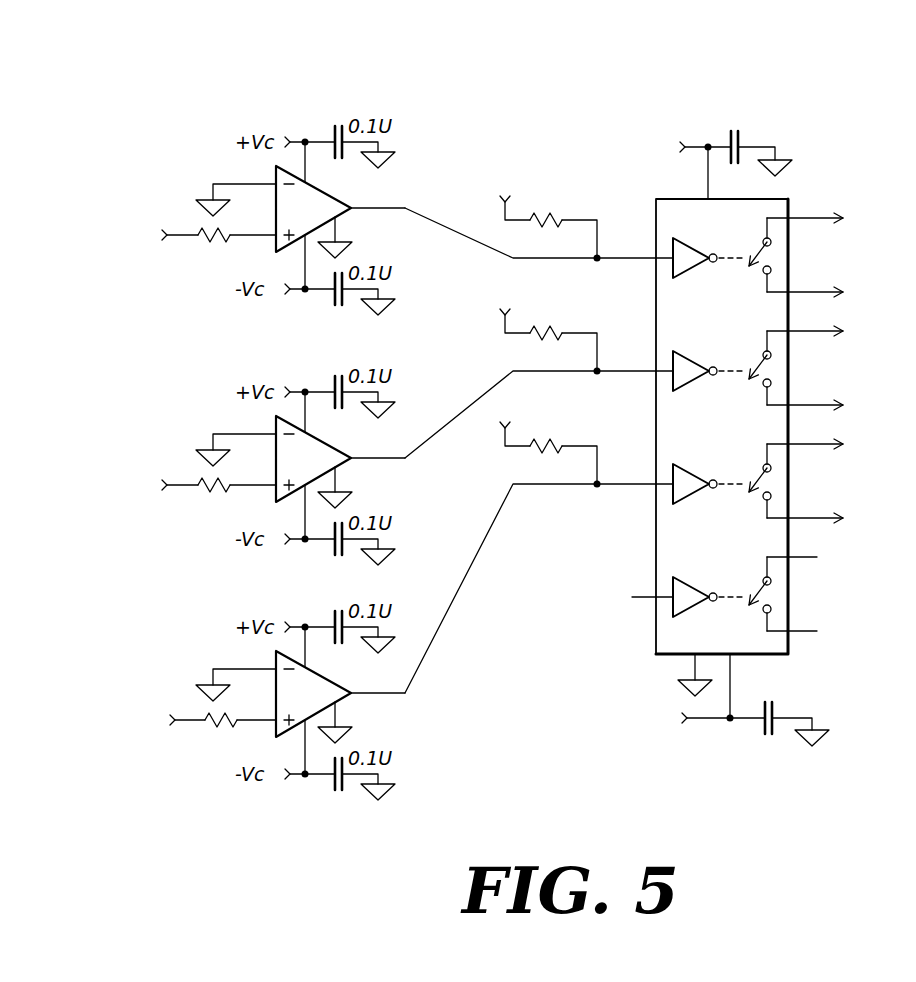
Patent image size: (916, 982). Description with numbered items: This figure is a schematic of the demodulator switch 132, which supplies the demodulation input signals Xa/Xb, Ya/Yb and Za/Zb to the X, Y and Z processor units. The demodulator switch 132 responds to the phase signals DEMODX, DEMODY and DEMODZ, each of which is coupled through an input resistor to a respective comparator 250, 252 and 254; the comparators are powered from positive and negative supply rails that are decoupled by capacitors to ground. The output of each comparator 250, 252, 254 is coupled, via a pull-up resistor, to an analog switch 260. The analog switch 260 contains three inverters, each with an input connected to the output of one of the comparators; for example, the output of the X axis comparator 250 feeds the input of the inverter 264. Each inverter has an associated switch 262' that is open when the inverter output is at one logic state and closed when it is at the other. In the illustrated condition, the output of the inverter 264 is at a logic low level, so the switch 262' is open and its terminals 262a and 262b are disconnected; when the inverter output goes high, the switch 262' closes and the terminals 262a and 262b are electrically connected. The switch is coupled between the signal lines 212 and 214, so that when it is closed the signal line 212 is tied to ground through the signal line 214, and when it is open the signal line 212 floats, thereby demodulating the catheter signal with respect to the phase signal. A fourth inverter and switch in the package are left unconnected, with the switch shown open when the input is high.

The demodulator switch 132 is at (547, 98).
The comparator 250 is at (328, 221).
The comparator 252 is at (328, 471).
The comparator 254 is at (328, 706).
The analog switch 260 is at (788, 199).
The inverter 264 is at (673, 266).
The switch 262' is at (725, 269).
The terminal 262a is at (762, 239).
The terminal 262b is at (764, 275).
The signal line 212 is at (800, 218).
The signal line 214 is at (802, 292).